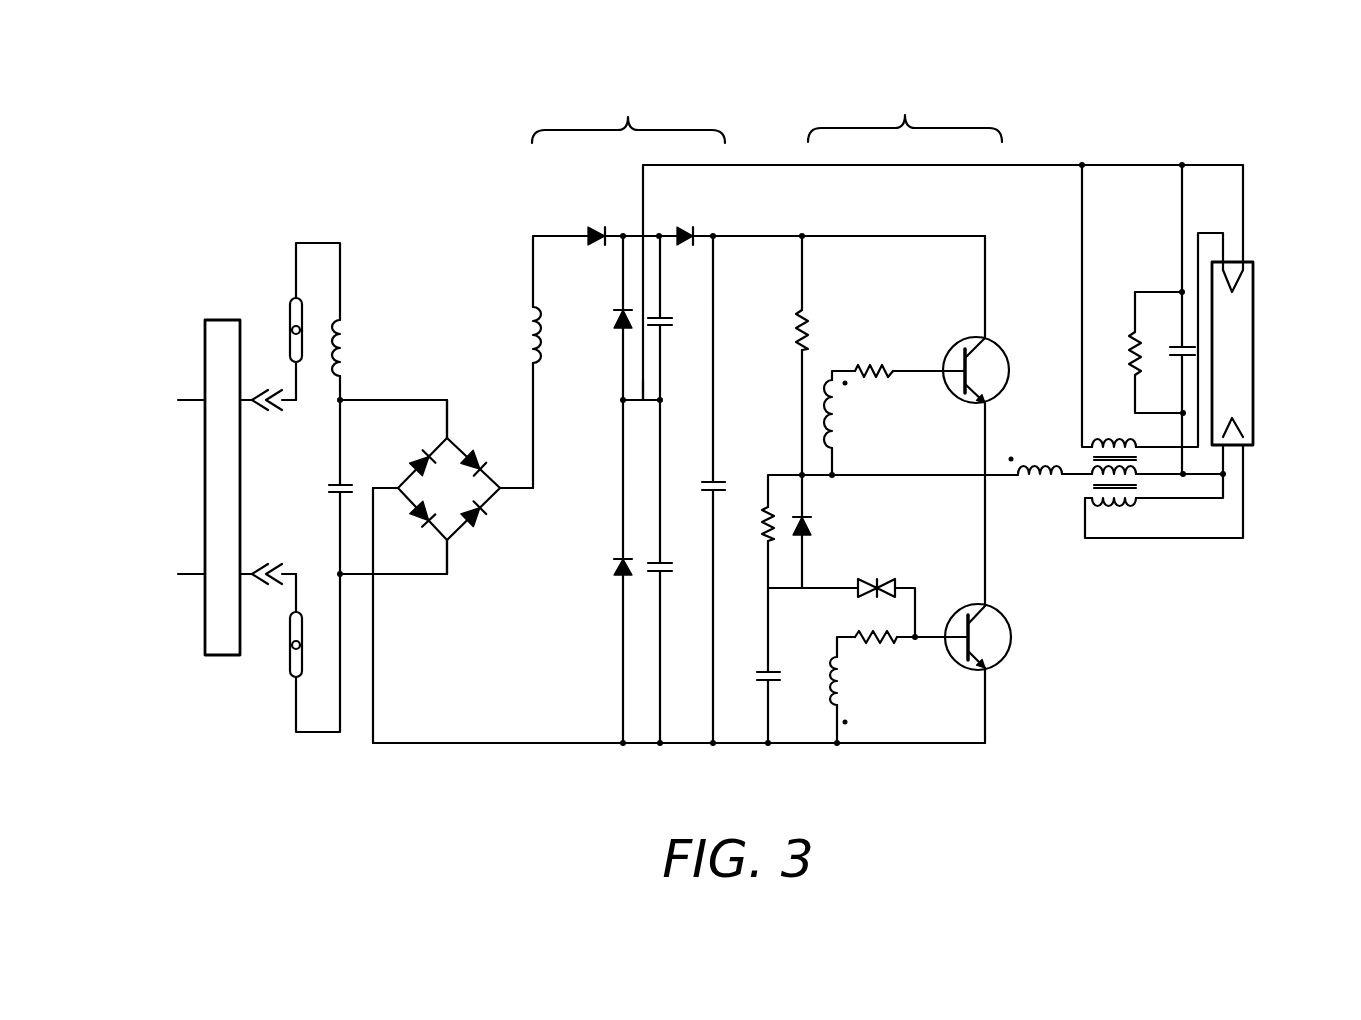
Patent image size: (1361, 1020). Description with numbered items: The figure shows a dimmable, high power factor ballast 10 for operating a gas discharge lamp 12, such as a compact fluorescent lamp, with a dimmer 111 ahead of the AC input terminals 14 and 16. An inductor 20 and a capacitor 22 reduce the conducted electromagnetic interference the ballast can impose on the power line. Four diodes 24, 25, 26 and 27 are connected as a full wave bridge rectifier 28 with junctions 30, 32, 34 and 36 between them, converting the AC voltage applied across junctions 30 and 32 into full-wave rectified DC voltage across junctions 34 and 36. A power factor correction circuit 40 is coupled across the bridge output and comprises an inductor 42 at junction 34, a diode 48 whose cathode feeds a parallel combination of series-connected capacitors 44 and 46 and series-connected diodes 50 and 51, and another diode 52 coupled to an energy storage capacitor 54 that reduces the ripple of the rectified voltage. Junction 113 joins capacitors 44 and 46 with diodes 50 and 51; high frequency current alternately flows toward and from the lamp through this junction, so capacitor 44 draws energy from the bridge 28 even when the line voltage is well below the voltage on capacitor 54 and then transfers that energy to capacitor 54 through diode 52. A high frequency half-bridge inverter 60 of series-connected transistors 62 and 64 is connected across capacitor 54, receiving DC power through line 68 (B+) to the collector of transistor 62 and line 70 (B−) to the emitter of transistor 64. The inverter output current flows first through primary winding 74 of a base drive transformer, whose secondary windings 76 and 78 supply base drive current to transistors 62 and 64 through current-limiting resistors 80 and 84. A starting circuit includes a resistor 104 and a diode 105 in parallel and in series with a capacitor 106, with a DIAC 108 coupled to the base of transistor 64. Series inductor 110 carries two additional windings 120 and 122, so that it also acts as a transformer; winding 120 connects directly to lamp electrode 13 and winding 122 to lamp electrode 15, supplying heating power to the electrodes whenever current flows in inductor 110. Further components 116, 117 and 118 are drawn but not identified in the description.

The dimmable high power factor ballast 10 is at (979, 55).
The gas discharge lamp 12 is at (1269, 353).
The lamp electrode 13 is at (1272, 413).
The terminal 14 is at (274, 310).
The lamp electrode 15 is at (1265, 251).
The terminal 16 is at (271, 665).
The inductor 20 is at (371, 332).
The capacitor 22 is at (308, 463).
The diode 24 is at (411, 556).
The diode 25 is at (484, 552).
The diode 26 is at (480, 421).
The diode 27 is at (393, 465).
The full wave bridge rectifier 28 is at (449, 489).
The junction 30 is at (430, 601).
The junction 32 is at (418, 399).
The junction 34 is at (526, 532).
The junction 36 is at (339, 516).
The power factor correction circuit 40 is at (628, 113).
The inductor 42 is at (499, 288).
The capacitor 44 is at (676, 360).
The capacitor 46 is at (676, 604).
The diode 48 is at (580, 195).
The diode 50 is at (605, 360).
The diode 51 is at (603, 609).
The diode 52 is at (729, 207).
The energy storage capacitor 54 is at (728, 442).
The high frequency half-bridge inverter 60 is at (905, 113).
The transistor 62 is at (976, 339).
The transistor 64 is at (974, 605).
The line 68 is at (852, 211).
The line 70 is at (679, 777).
The primary winding 74 is at (1040, 505).
The secondary winding 76 is at (867, 414).
The secondary winding 78 is at (812, 658).
The resistor 80 is at (878, 329).
The resistor 84 is at (876, 663).
The resistor 104 is at (743, 559).
The diode 105 is at (822, 549).
The capacitor 106 is at (746, 645).
The DIAC 108 is at (900, 552).
The series inductor 110 is at (1136, 499).
The dimmer 111 is at (197, 513).
The junction 113 is at (666, 428).
The resistor 116 is at (1112, 306).
The resistor 117 is at (772, 309).
The capacitor 118 is at (1161, 304).
The additional winding 120 is at (1090, 538).
The additional winding 122 is at (1075, 405).